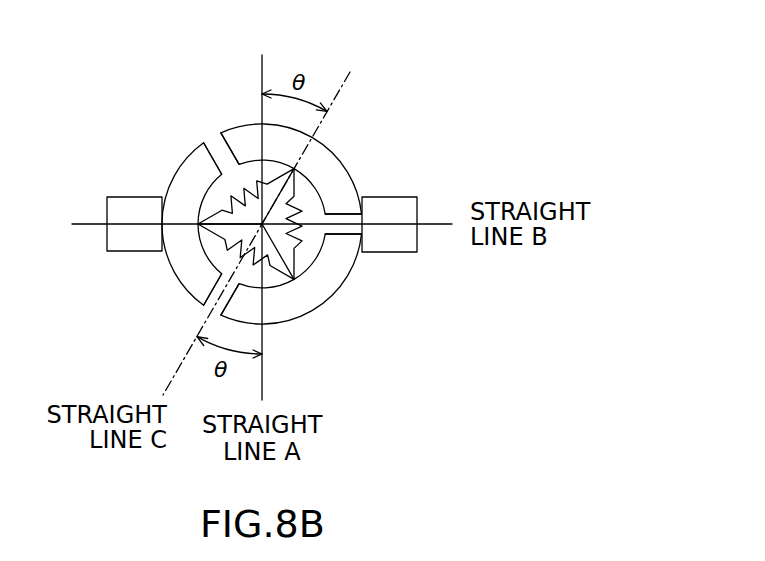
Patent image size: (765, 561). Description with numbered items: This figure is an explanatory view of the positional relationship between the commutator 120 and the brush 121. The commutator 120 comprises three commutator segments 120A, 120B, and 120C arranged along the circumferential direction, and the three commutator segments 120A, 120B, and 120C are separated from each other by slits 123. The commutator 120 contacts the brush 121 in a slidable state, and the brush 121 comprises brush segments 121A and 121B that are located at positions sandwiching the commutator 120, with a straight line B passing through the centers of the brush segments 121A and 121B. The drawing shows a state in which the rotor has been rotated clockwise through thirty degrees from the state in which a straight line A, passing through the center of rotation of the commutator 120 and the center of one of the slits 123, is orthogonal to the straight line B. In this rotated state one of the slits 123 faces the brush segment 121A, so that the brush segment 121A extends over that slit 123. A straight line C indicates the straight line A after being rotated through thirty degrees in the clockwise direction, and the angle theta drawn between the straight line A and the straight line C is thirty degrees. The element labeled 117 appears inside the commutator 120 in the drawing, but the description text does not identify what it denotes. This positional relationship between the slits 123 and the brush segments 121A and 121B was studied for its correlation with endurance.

The strain gauge 117 is at (234, 200).
The commutator 120 is at (250, 208).
The commutator segment 120A is at (334, 167).
The commutator segment 120B is at (305, 293).
The commutator segment 120C is at (185, 255).
The brush 121 is at (286, 220).
The brush segment 121A is at (388, 197).
The brush segment 121B is at (133, 197).
The slit 123 is at (337, 233).